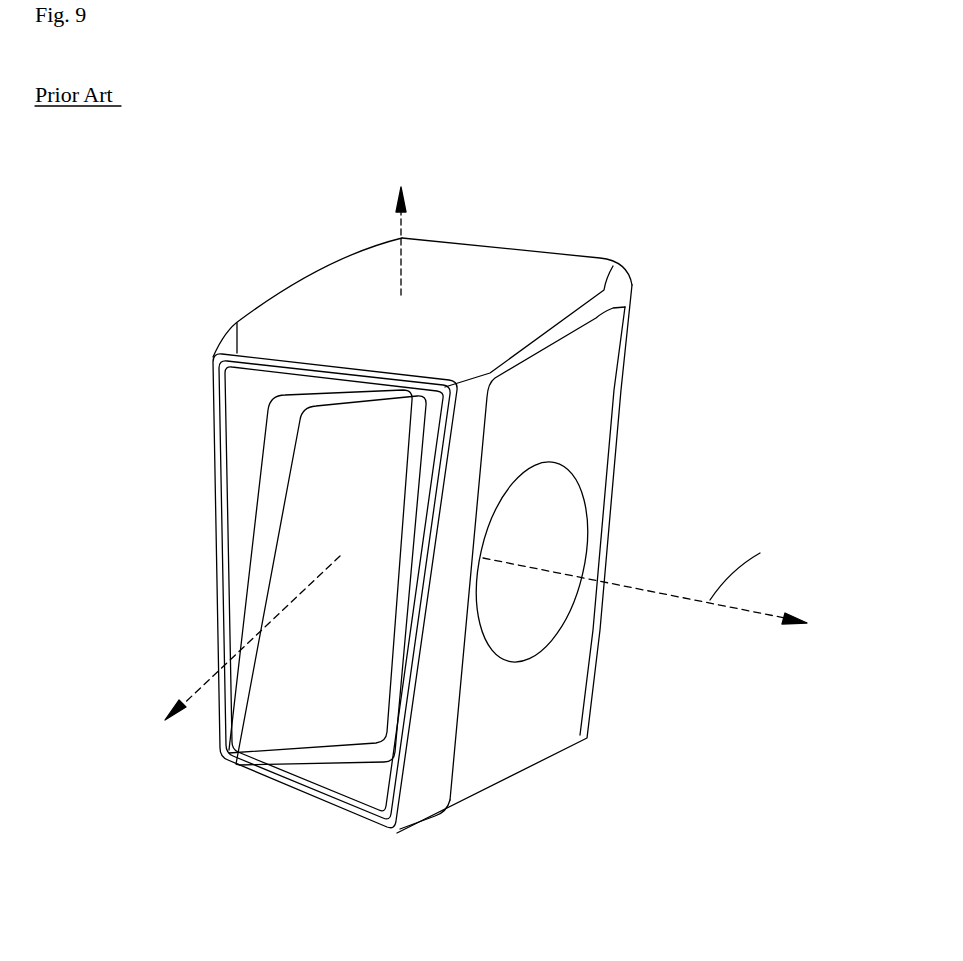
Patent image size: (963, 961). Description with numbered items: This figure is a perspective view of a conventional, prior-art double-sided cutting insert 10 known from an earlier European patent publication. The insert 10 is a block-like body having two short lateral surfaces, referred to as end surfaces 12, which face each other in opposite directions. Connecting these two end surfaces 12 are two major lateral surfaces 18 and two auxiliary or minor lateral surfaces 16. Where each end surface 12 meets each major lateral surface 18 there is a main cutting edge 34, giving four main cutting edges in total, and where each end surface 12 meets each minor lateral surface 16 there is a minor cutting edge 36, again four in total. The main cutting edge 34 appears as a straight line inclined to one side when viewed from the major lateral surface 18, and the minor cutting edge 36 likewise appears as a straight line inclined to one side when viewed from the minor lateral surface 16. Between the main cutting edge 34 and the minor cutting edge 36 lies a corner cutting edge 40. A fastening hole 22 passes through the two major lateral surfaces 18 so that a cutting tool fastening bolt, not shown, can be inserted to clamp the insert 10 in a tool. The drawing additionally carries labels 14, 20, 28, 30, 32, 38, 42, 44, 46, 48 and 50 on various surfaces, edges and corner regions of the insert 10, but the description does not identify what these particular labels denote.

The double-sided cutting insert 10 is at (728, 230).
The end surface 12 is at (297, 522).
The side surface 14 is at (327, 310).
The auxiliary lateral surface 16 is at (483, 273).
The major lateral surface 18 is at (583, 373).
The rounded edge 20 is at (557, 330).
The fastening hole 22 is at (560, 542).
The corner 28 is at (215, 353).
The corner 30 is at (227, 760).
The front face 32 is at (213, 447).
The main cutting edge 34 is at (213, 598).
The minor cutting edge 36 is at (282, 792).
The outer edge 38 is at (213, 362).
The corner cutting edge 40 is at (213, 367).
The inner edge 42 is at (225, 763).
The inner wall surface 44 is at (240, 475).
The inner wall surface 46 is at (273, 600).
The inner surface 48 is at (293, 560).
The edge 50 is at (437, 712).